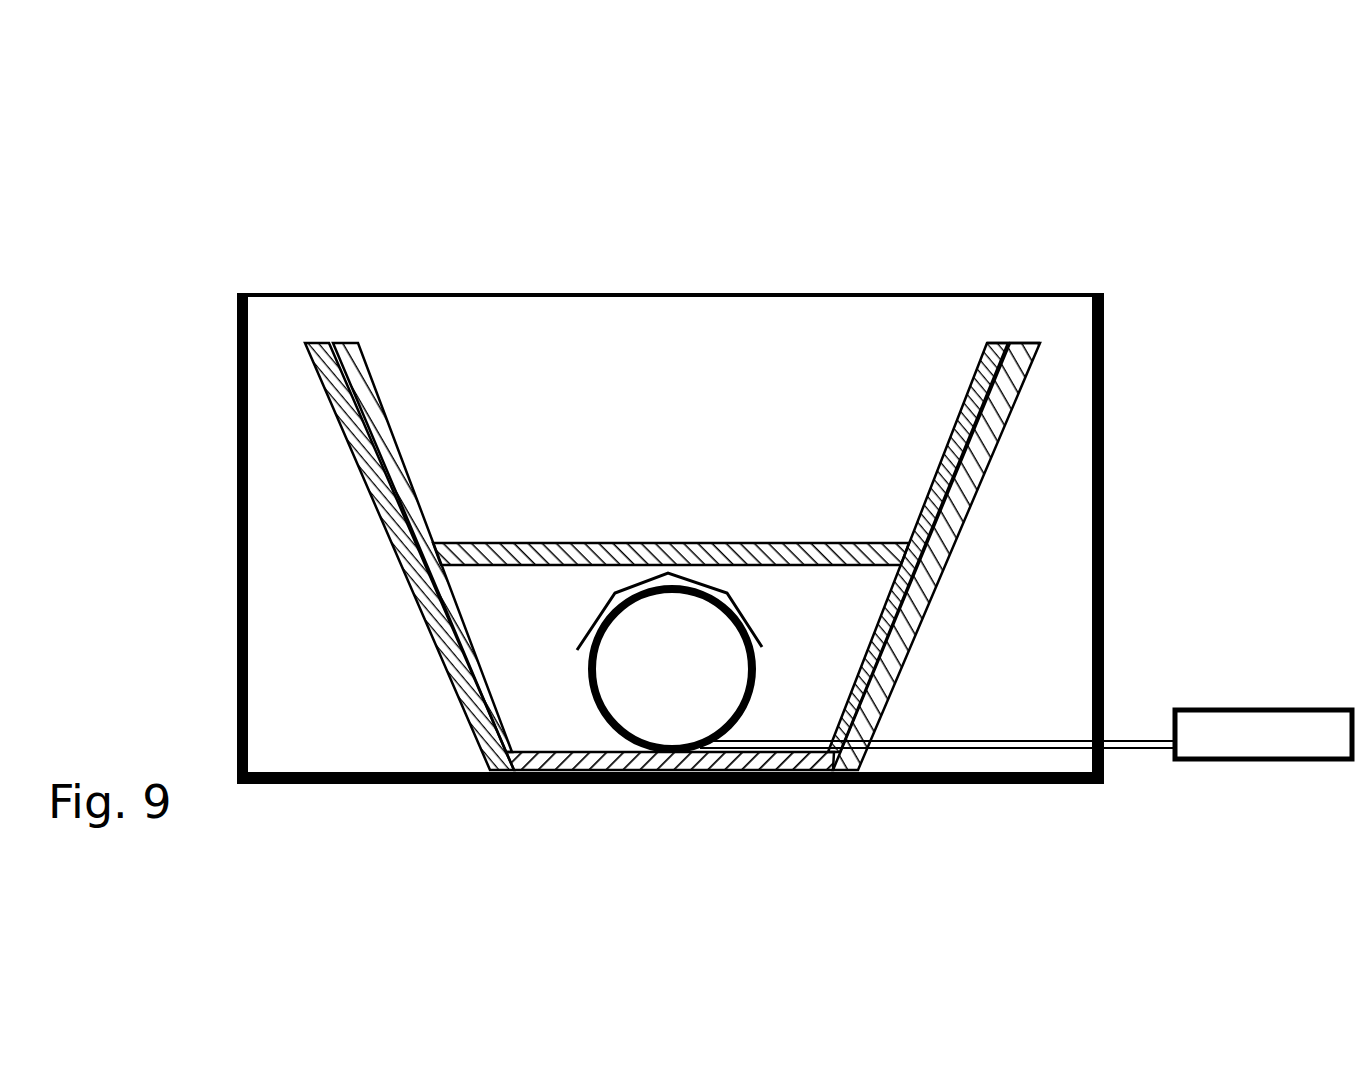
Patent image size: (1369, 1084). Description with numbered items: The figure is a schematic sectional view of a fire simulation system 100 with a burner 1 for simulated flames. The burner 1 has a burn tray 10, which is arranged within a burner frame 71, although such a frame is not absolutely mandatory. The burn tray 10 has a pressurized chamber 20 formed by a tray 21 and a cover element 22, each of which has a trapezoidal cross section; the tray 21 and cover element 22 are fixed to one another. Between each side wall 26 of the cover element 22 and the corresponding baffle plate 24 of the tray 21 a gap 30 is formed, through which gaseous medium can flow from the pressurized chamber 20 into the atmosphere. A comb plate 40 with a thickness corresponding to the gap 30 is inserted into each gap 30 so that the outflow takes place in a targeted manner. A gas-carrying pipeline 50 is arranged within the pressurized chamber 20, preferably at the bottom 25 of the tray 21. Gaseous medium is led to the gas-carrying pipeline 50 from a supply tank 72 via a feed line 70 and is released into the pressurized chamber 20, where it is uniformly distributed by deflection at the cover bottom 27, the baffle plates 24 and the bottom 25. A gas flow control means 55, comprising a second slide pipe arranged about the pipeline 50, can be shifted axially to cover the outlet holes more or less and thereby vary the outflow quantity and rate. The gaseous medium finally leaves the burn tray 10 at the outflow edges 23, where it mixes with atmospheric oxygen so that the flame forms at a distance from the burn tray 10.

The fire simulation system 100 is at (183, 190).
The burner 1 is at (204, 414).
The burn tray 10 is at (565, 330).
The pressurized chamber 20 is at (759, 576).
The tray 21 is at (888, 685).
The cover element 22 is at (688, 545).
The outflow edge 23 is at (1010, 340).
The baffle plate 24 is at (398, 590).
The bottom 25 is at (795, 784).
The side wall 26 is at (966, 400).
The cover bottom 27 is at (553, 545).
The gap 30 is at (990, 455).
The comb plate 40 is at (466, 647).
The gas-carrying pipeline 50 is at (592, 667).
The gas flow control means 55 is at (762, 640).
The feed line 70 is at (1145, 750).
The burner frame 71 is at (1104, 605).
The supply tank 72 is at (1260, 735).